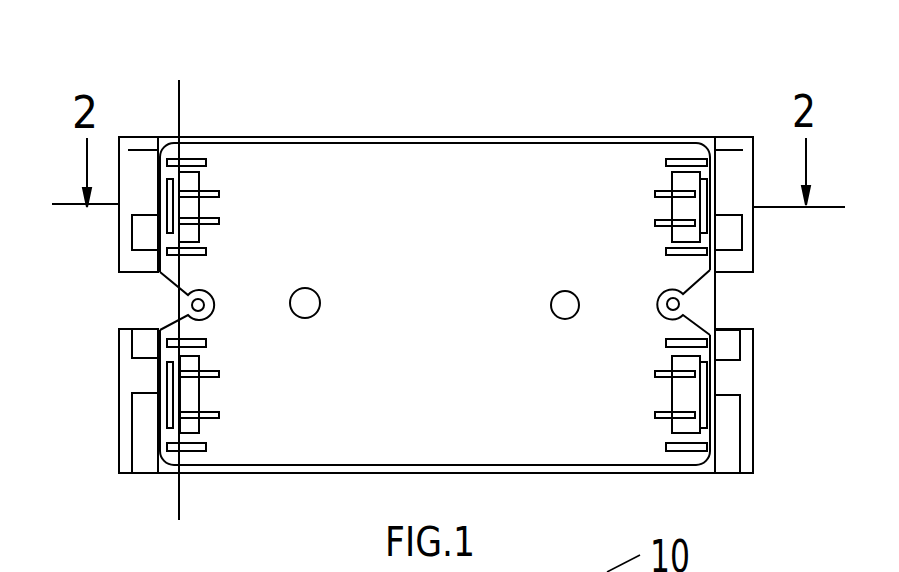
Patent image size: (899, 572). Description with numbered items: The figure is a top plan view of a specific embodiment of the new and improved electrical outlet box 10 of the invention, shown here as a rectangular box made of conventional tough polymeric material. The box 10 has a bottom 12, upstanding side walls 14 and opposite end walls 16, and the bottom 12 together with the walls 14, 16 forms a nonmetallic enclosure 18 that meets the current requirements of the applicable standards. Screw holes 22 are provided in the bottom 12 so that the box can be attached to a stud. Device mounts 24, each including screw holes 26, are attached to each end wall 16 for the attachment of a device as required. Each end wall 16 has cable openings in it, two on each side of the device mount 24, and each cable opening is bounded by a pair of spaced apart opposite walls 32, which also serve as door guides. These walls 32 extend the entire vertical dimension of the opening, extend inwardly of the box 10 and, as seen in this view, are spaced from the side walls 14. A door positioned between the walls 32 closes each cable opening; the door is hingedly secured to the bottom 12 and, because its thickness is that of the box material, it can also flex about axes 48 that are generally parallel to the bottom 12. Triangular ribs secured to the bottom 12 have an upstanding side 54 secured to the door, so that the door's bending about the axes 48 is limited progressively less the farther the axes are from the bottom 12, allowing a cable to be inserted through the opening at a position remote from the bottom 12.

The electrical outlet box 10 is at (425, 98).
The bottom 12 is at (455, 404).
The upstanding side walls 14 is at (230, 473).
The end walls 16 is at (155, 370).
The nonmetallic enclosure 18 is at (505, 200).
The screw holes 22 is at (320, 317).
The device mounts 24 is at (662, 310).
The screw holes 26 is at (679, 303).
The walls 32 is at (685, 162).
The axes 48 is at (175, 497).
The upstanding side 54 is at (180, 221).